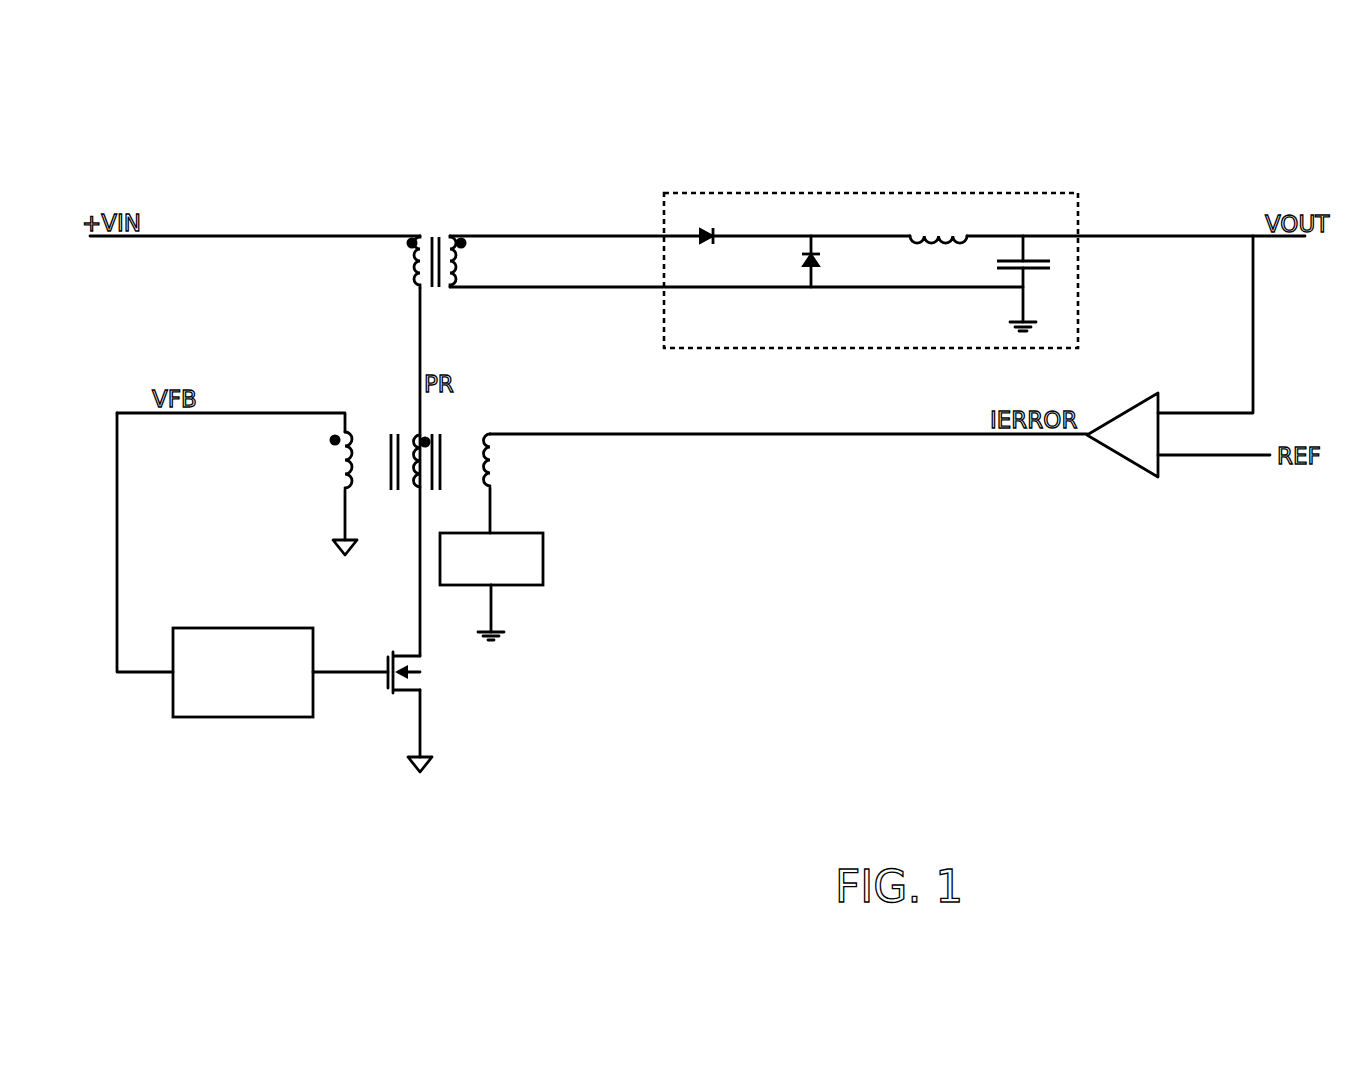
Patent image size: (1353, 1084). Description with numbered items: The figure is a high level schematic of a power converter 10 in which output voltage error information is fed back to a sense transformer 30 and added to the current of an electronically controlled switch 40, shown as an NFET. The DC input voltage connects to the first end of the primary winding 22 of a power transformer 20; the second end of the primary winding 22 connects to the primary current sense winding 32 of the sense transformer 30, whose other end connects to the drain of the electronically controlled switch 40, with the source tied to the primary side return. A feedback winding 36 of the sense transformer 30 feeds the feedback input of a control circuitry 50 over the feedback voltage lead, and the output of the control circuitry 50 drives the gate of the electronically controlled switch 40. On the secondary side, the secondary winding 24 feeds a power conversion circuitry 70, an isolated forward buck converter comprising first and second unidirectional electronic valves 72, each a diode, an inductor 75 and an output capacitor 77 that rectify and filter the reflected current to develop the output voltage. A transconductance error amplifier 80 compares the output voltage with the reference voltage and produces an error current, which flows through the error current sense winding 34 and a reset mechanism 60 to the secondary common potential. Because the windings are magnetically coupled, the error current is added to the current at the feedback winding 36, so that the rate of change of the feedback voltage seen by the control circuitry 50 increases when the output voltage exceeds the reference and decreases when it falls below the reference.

The power converter 10 is at (253, 140).
The power transformer 20 is at (440, 233).
The primary winding 22 is at (412, 273).
The secondary winding 24 is at (460, 265).
The sense transformer 30 is at (390, 430).
The primary current sense winding 32 is at (418, 492).
The error current sense winding 34 is at (564, 482).
The feedback winding 36 is at (319, 448).
The electronically controlled switch 40 is at (425, 655).
The control circuitry 50 is at (200, 718).
The reset mechanism 60 is at (545, 555).
The power conversion circuitry 70 is at (908, 246).
The unidirectional electronic valve 72 is at (708, 232).
The inductor 75 is at (935, 238).
The output capacitor 77 is at (1052, 263).
The transconductance error amplifier 80 is at (1125, 460).